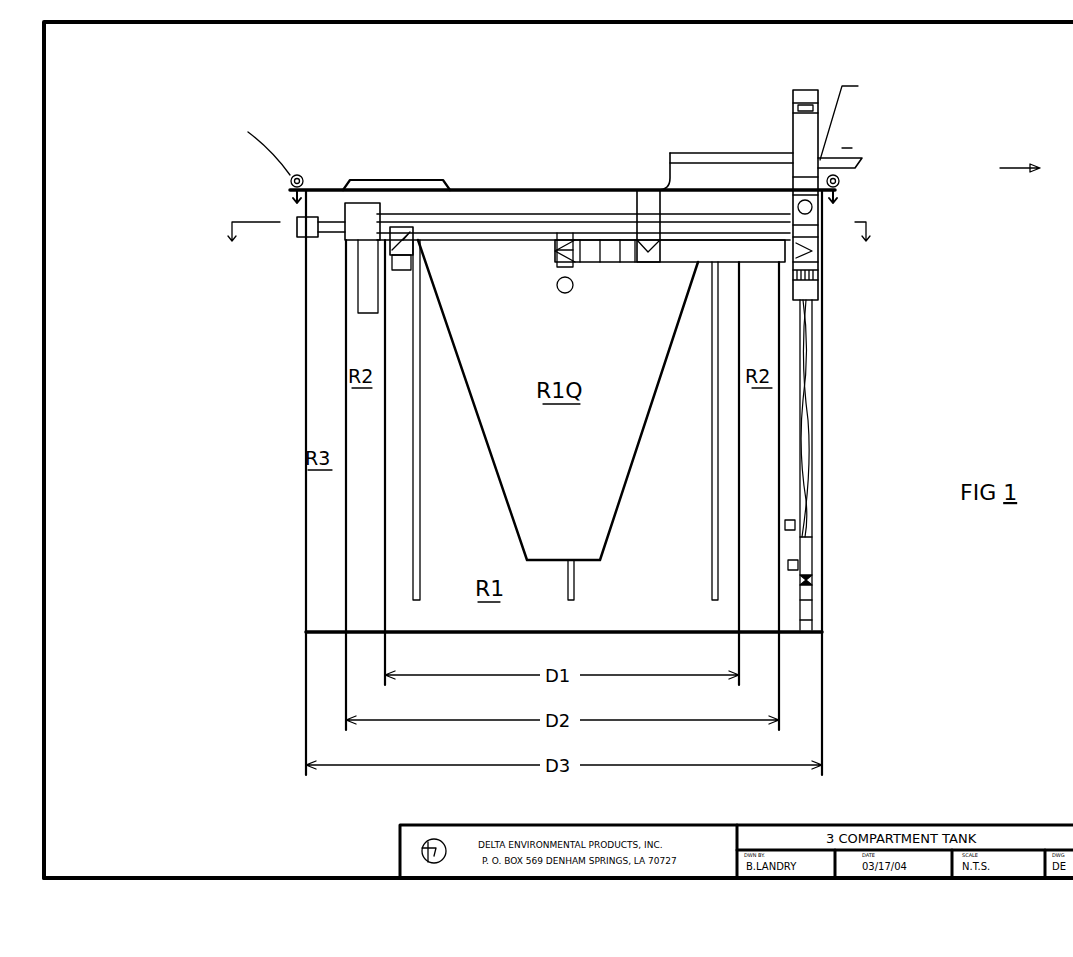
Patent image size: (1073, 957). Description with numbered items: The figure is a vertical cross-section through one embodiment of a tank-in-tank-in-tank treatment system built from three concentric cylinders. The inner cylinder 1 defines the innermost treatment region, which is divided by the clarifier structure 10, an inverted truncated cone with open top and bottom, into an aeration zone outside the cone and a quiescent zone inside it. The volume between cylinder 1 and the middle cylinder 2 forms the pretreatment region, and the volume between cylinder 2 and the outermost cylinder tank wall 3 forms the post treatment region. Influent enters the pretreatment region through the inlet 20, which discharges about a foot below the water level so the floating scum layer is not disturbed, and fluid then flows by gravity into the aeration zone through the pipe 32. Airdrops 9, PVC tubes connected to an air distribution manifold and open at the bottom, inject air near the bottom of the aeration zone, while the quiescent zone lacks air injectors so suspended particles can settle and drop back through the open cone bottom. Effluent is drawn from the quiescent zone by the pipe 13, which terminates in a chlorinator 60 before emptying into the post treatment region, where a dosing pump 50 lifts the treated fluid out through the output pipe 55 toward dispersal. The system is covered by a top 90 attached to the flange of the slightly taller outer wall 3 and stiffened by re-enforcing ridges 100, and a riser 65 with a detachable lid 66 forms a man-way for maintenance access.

The inner cylinder 1 is at (385, 570).
The middle cylinder 2 is at (346, 535).
The outermost cylinder tank wall 3 is at (306, 492).
The airdrop 9 is at (421, 535).
The clarifier structure 10 is at (470, 341).
The pipe 13 is at (690, 256).
The inlet 20 is at (295, 222).
The pipe 32 is at (402, 245).
The dosing pump 50 is at (815, 573).
The output pipe 55 is at (852, 150).
The chlorinator 60 is at (797, 90).
The riser 65 is at (665, 185).
The detachable lid 66 is at (712, 150).
The top 90 is at (595, 182).
The re-enforcing ridge 100 is at (387, 170).